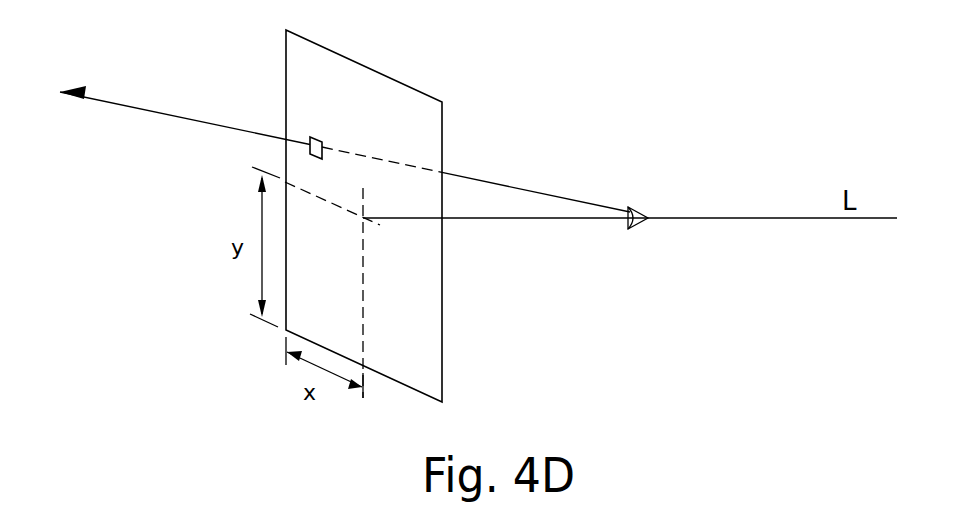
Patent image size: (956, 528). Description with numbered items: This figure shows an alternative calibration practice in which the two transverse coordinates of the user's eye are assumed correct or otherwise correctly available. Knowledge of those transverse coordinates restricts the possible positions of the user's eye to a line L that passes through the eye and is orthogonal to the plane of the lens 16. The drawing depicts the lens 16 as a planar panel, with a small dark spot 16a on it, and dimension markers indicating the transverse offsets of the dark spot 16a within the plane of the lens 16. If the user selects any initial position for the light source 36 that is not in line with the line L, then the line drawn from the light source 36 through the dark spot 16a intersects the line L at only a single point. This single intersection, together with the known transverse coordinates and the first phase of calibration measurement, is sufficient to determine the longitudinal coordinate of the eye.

The lens 16 is at (313, 72).
The dark spot 16a is at (316, 126).
The light source 36 is at (326, 147).